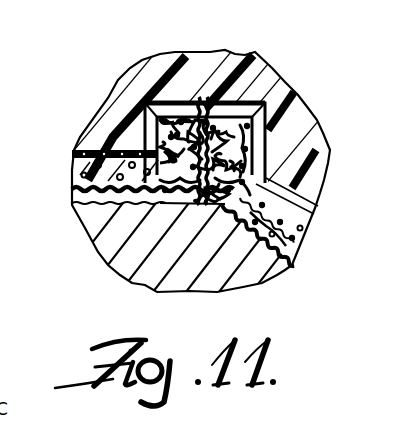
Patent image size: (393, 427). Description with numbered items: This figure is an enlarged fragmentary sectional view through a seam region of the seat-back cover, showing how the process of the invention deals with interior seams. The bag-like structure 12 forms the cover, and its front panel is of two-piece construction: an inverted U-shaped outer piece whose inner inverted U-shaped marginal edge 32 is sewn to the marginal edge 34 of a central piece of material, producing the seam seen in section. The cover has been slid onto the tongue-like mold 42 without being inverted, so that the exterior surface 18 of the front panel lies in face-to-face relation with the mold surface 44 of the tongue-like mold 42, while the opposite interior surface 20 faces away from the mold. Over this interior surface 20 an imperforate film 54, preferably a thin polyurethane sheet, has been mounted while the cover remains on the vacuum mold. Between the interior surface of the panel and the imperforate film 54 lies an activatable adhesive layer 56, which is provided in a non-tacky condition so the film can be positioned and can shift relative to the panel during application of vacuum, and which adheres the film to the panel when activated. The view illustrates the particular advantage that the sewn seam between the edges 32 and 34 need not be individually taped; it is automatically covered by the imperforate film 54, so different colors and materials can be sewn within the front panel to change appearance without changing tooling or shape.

The bag-like structure 12 is at (80, 175).
The exterior surface 18 is at (96, 208).
The interior surface 20 is at (80, 127).
The inner inverted U-shaped marginal edge 32 is at (316, 152).
The marginal edge 34 is at (208, 95).
The tongue-like mold 42 is at (240, 273).
The mold surface 44 is at (350, 208).
The imperforate film 54 is at (178, 53).
The activatable adhesive layer 56 is at (102, 103).